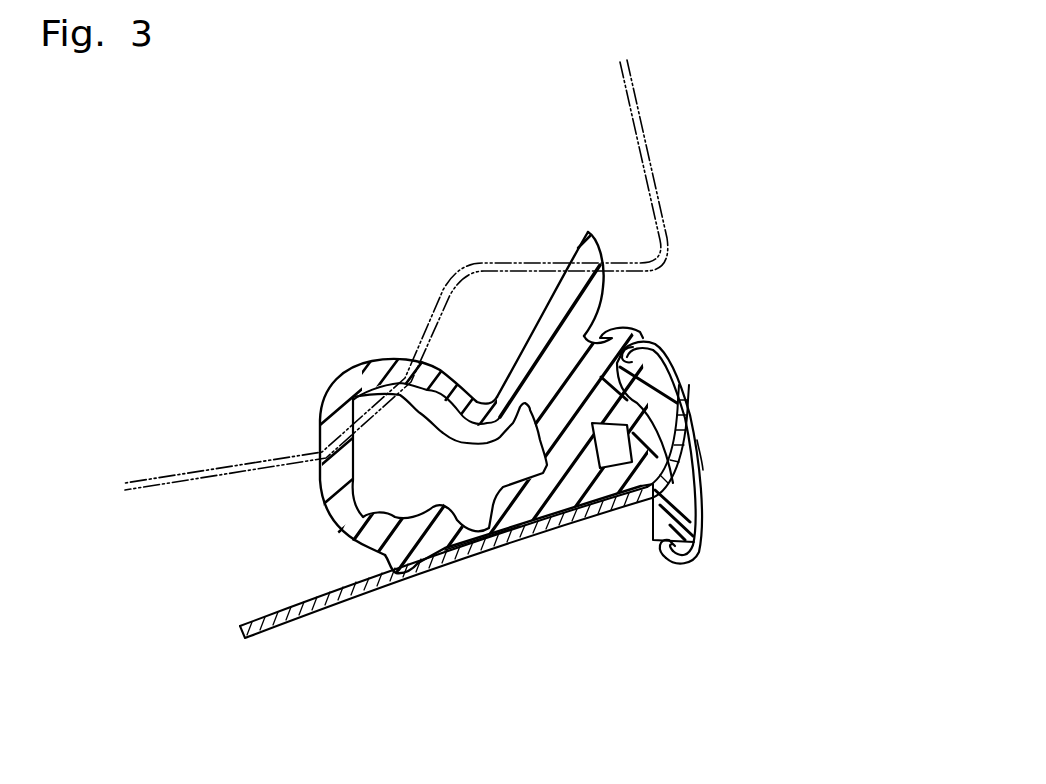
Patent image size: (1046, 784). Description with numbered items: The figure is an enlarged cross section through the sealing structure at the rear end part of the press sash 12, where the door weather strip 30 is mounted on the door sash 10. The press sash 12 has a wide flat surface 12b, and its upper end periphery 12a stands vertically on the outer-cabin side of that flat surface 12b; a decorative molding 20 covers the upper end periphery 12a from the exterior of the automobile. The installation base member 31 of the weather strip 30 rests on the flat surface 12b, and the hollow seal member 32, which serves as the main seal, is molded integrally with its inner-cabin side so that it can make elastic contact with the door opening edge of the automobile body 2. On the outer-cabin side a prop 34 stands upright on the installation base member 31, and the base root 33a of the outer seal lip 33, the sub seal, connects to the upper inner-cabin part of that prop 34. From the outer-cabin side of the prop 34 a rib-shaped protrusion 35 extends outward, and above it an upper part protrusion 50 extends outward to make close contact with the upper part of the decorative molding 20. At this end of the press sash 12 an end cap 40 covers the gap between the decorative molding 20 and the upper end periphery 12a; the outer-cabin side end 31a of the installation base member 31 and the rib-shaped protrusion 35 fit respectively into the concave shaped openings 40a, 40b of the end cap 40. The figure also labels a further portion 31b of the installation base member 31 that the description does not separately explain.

The automobile body 2 is at (652, 157).
The door sash 10 is at (290, 643).
The press sash 12 is at (348, 595).
The upper end periphery 12a is at (670, 417).
The flat surface 12b is at (477, 560).
The decorative molding 20 is at (700, 445).
The door weather strip 30 is at (658, 300).
The installation base member 31 is at (513, 503).
The outer-cabin side end 31a is at (640, 507).
The base wall projection 31b is at (400, 545).
The hollow seal member 32 is at (333, 407).
The outer seal lip 33 is at (588, 254).
The base root 33a is at (548, 381).
The prop 34 is at (395, 392).
The rib-shaped protrusion 35 is at (665, 388).
The end cap 40 is at (680, 503).
The concave shaped opening 40a is at (698, 480).
The concave shaped opening 40b is at (668, 375).
The upper part protrusion 50 is at (645, 323).